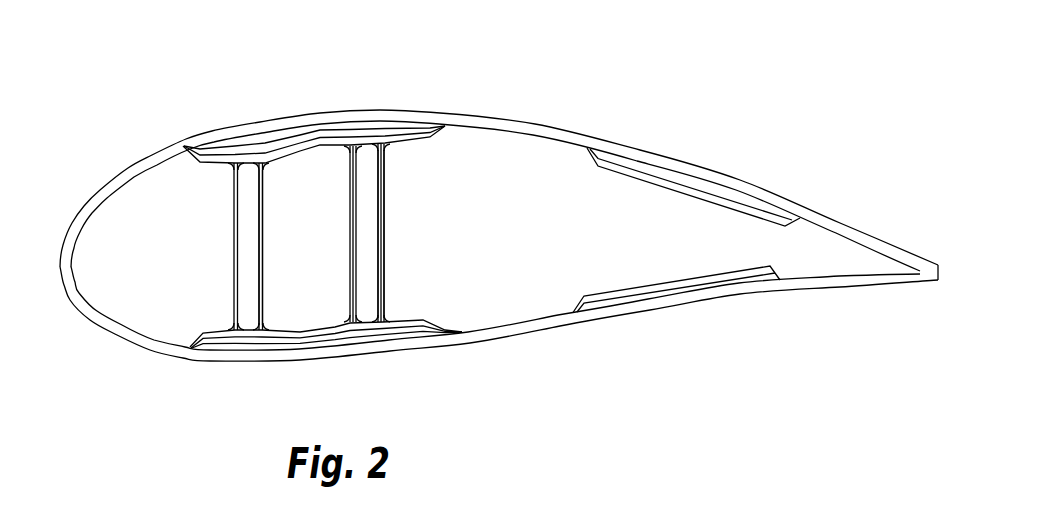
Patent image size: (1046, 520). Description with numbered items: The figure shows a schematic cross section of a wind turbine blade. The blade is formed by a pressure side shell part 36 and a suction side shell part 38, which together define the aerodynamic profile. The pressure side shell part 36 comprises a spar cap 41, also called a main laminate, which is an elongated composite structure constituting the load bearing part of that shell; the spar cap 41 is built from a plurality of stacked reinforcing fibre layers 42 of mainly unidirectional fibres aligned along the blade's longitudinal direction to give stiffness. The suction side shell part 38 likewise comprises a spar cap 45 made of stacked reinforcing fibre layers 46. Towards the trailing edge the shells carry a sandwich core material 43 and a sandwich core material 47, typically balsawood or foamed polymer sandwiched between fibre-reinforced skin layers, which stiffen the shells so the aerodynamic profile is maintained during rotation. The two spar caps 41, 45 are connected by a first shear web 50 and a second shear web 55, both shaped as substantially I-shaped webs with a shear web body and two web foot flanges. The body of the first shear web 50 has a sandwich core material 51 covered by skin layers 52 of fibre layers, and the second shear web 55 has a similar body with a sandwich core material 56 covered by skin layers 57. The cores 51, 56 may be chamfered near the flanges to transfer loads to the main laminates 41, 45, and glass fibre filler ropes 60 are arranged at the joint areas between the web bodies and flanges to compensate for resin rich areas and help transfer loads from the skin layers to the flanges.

The pressure side shell part 36 is at (550, 331).
The suction side shell part 38 is at (535, 124).
The spar cap 41 is at (393, 352).
The stacked reinforcing fibre layers 42 is at (332, 363).
The sandwich core material 43 is at (690, 302).
The spar cap 45 is at (282, 140).
The stacked reinforcing fibre layers 46 is at (364, 112).
The sandwich core material 47 is at (687, 167).
The first shear web 50 is at (265, 230).
The sandwich core material 51 is at (265, 262).
The skin layers 52 is at (262, 196).
The second shear web 55 is at (386, 229).
The sandwich core material 56 is at (377, 258).
The skin layers 57 is at (386, 208).
The filler ropes 60 is at (353, 147).